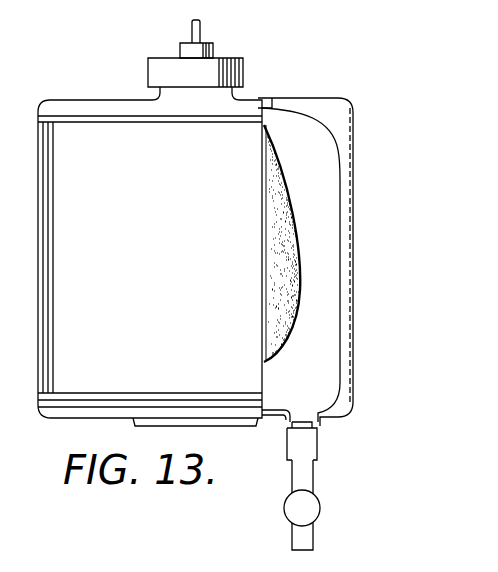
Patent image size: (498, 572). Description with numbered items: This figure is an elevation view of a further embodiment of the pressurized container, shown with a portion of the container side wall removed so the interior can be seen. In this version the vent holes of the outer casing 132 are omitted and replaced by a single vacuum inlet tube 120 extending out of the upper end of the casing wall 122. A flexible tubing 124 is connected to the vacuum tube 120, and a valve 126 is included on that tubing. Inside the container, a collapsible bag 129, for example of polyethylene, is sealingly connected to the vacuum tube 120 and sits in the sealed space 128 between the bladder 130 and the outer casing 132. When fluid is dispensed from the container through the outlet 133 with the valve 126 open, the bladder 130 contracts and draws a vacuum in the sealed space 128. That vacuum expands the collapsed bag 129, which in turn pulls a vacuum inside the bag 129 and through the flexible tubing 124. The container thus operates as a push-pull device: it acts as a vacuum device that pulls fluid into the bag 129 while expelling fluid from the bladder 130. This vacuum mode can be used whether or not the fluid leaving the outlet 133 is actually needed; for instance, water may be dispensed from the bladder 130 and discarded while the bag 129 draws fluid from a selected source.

The vacuum inlet tube 120 is at (319, 428).
The casing wall 122 is at (352, 188).
The flexible tubing 124 is at (315, 545).
The valve 126 is at (320, 500).
The sealed space 128 is at (341, 184).
The collapsible bag 129 is at (326, 234).
The bladder 130 is at (272, 169).
The outer casing 132 is at (90, 99).
The outlet 133 is at (215, 58).